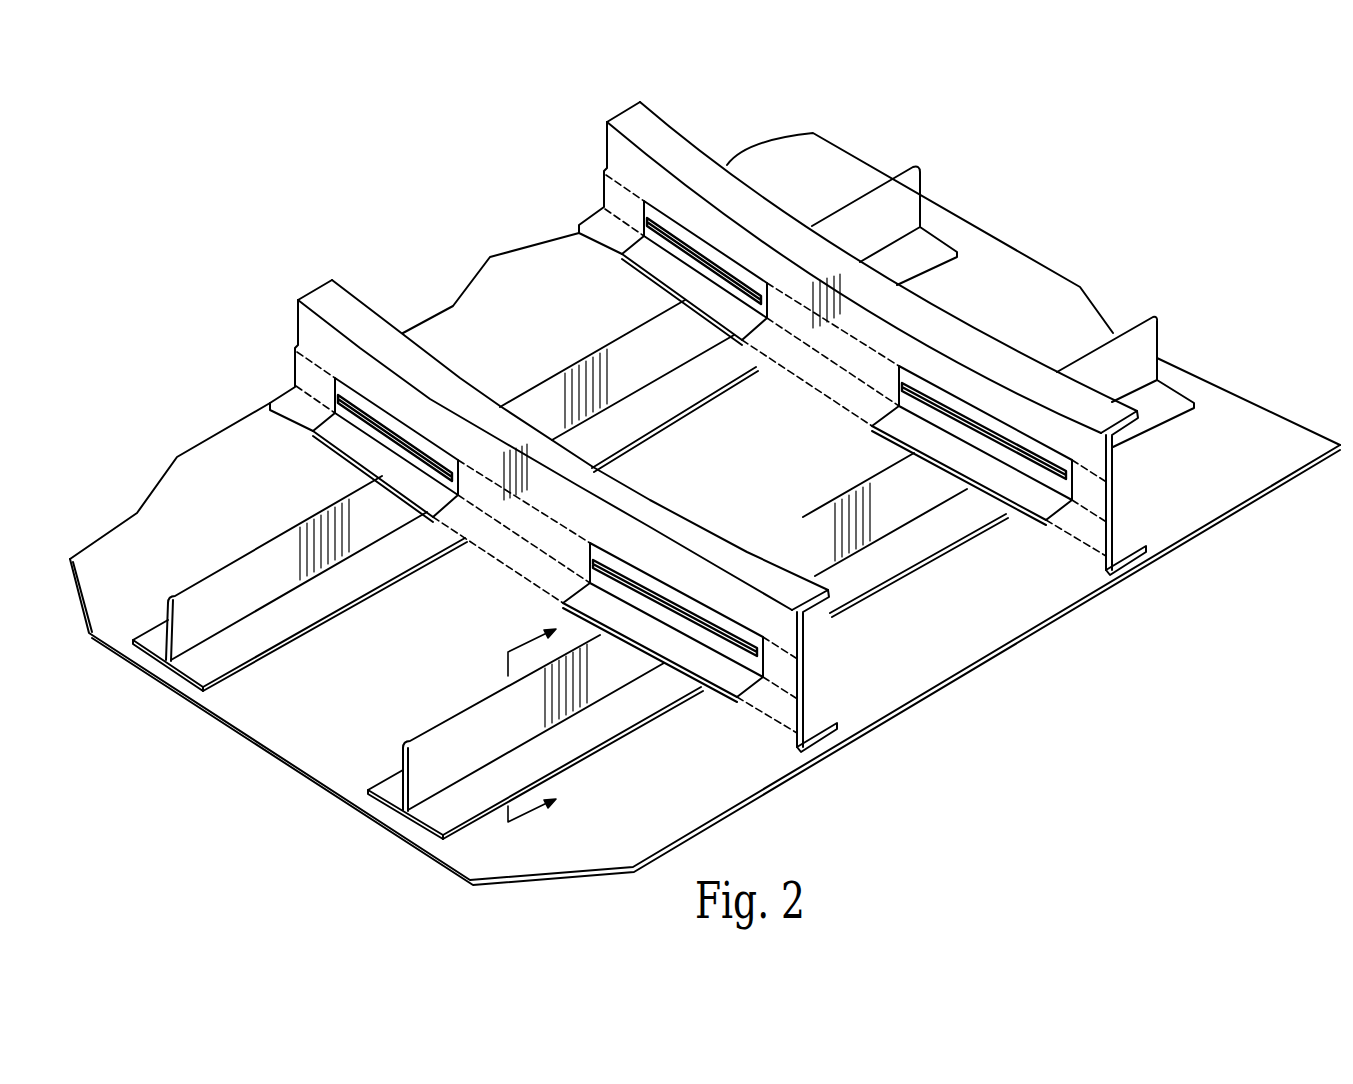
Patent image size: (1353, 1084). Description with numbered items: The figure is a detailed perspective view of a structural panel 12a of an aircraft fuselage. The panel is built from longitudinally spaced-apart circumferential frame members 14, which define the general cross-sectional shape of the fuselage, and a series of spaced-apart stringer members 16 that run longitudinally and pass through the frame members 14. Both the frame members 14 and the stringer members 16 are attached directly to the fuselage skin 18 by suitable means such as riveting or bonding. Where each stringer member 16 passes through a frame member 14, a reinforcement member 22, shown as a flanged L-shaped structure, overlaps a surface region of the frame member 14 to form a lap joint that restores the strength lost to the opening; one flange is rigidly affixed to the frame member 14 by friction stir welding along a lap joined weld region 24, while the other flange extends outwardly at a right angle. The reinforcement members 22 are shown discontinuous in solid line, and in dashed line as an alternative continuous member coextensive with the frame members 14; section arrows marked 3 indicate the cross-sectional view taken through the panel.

The structural panel 12a is at (1036, 677).
The frame member 14 is at (667, 143).
The stringer member 16 is at (243, 549).
The fuselage skin 18 is at (352, 701).
The reinforcement member 22 is at (313, 433).
The lap joined weld region 24 is at (410, 458).
The section line 3- 3 is at (532, 725).